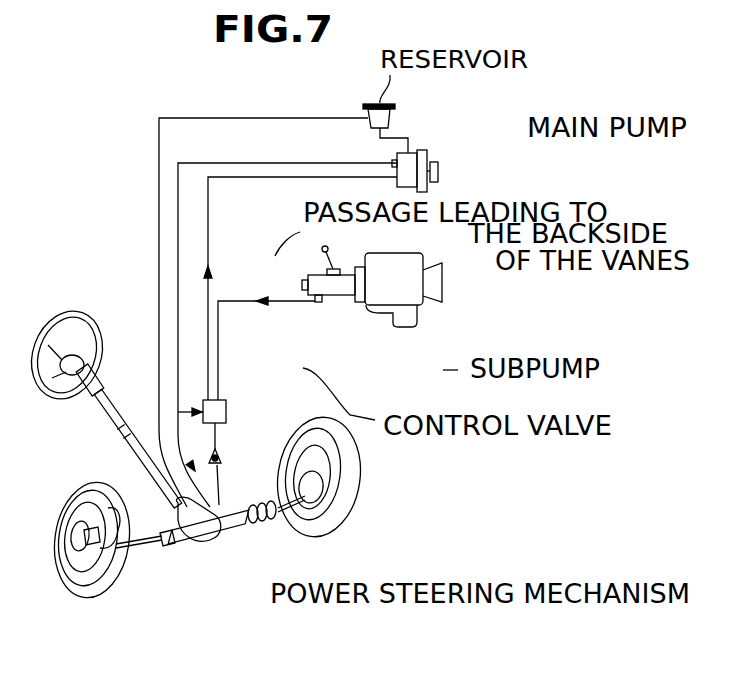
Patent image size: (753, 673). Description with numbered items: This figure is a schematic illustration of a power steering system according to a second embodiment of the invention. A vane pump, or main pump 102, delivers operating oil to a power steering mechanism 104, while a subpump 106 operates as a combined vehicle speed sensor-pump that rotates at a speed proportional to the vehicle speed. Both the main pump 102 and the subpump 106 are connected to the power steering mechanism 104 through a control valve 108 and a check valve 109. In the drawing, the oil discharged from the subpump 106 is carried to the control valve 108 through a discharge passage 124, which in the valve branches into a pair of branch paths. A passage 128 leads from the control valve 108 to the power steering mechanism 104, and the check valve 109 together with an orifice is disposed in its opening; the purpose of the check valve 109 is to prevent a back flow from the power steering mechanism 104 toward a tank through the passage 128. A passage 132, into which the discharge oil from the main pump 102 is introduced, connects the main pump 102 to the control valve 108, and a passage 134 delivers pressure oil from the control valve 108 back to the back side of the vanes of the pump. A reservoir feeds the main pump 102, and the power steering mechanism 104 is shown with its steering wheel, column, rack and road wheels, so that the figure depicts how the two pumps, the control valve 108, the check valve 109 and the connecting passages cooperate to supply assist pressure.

The main pump 102 is at (410, 152).
The power steering mechanism 104 is at (203, 542).
The subpump 106 is at (340, 300).
The control valve 108 is at (225, 400).
The check valve 109 is at (220, 463).
The discharge passage 124 is at (297, 302).
The passage 128 is at (217, 440).
The passage 132 is at (180, 221).
The passage 134 is at (208, 253).